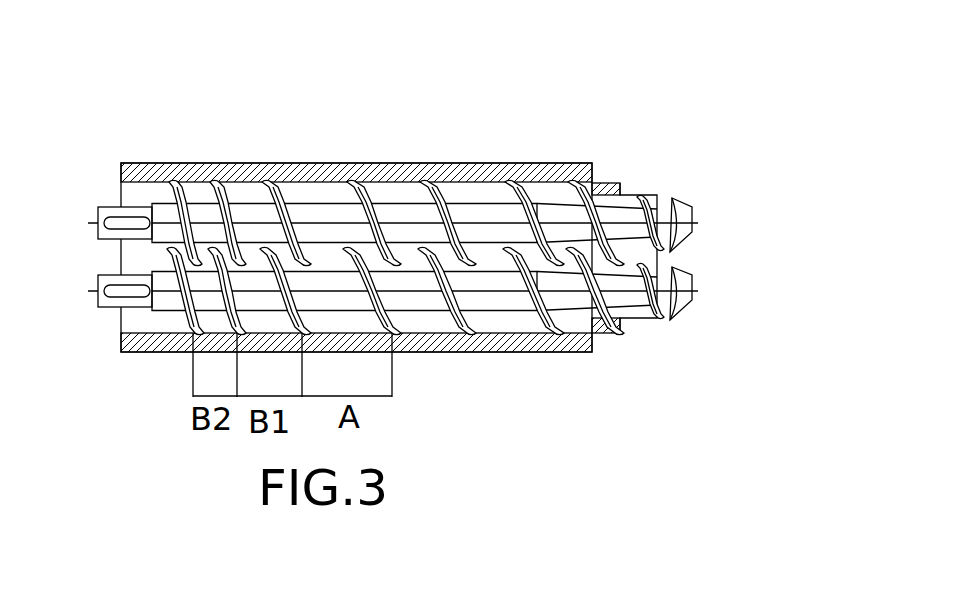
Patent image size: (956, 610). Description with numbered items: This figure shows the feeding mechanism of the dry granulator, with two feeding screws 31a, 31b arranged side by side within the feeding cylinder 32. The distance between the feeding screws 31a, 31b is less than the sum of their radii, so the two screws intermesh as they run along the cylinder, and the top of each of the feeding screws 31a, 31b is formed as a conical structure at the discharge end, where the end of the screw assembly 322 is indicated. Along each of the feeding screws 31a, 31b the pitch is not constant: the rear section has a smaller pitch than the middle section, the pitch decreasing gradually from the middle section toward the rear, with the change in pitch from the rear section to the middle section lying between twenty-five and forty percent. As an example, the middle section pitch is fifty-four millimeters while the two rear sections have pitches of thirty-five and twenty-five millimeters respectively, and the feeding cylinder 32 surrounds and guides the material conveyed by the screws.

The feeding cylinder 32 is at (312, 173).
The feeding screw 31a is at (453, 170).
The feeding screw 31b is at (405, 280).
The screw tip 322 is at (672, 237).